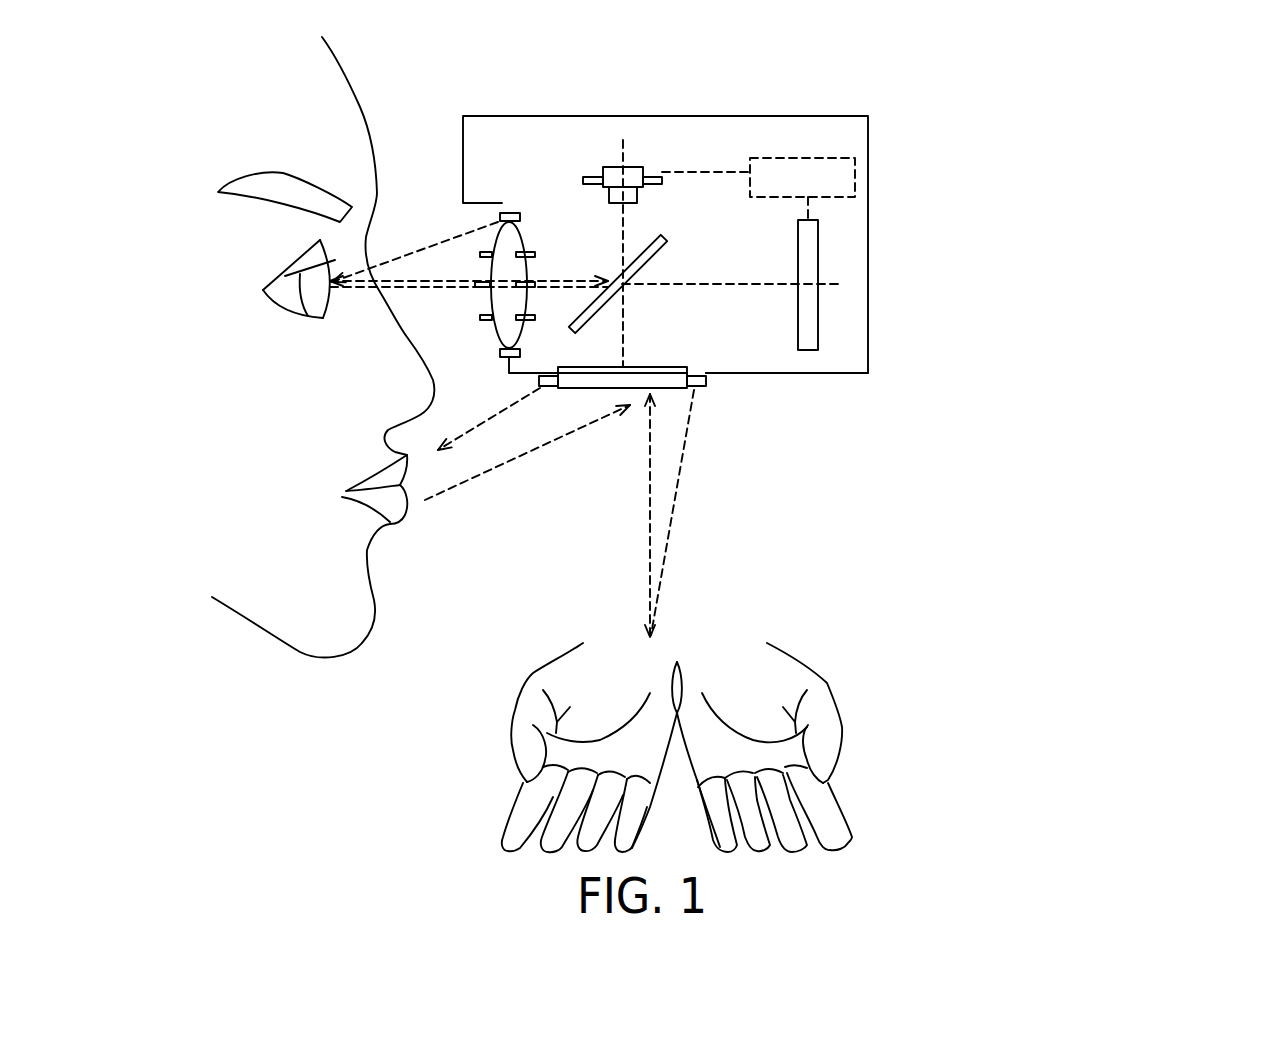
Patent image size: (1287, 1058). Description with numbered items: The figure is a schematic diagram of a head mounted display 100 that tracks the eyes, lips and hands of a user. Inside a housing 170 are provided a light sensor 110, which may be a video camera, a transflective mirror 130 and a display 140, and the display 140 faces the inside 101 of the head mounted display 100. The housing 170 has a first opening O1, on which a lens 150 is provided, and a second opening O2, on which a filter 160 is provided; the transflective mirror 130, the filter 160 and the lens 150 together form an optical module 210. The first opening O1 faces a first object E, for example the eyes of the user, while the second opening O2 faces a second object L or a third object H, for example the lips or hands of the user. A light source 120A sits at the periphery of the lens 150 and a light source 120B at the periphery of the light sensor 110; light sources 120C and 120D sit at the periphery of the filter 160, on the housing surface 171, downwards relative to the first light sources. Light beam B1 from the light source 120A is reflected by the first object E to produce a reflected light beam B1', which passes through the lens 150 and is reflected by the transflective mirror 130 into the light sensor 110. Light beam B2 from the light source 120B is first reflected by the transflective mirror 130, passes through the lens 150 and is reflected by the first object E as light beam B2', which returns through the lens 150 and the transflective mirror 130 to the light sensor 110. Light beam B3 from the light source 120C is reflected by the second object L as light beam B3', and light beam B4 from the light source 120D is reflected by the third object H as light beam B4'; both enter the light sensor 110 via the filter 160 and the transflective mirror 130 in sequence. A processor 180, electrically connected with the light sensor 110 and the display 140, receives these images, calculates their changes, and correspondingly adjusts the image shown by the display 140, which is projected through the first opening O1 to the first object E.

The head mounted display 100 is at (1012, 830).
The inside of the head mounted display 101 is at (546, 184).
The light sensor 110 is at (634, 168).
The light source 120A is at (513, 212).
The light source 120B is at (620, 275).
The light source 120C is at (548, 388).
The light source 120D is at (706, 381).
The transflective mirror 130 is at (665, 237).
The display 140 is at (808, 271).
The lens 150 is at (500, 299).
The filter 160 is at (672, 388).
The housing 170 is at (868, 200).
The housing surface 171 is at (842, 375).
The processor 180 is at (823, 158).
The optical module 210 is at (1222, 178).
The first opening O1 is at (513, 212).
The second opening O2 is at (695, 368).
The light beam B1 is at (415, 158).
The reflected light beam B1' is at (416, 160).
The light beam B2 is at (697, 159).
The reflected light beam B2' is at (469, 281).
The light beam B3 is at (489, 463).
The reflected light beam B3' is at (527, 486).
The light beam B4 is at (794, 512).
The reflected light beam B4' is at (601, 515).
The first object E is at (285, 276).
The second object L is at (405, 512).
The third object H is at (547, 733).